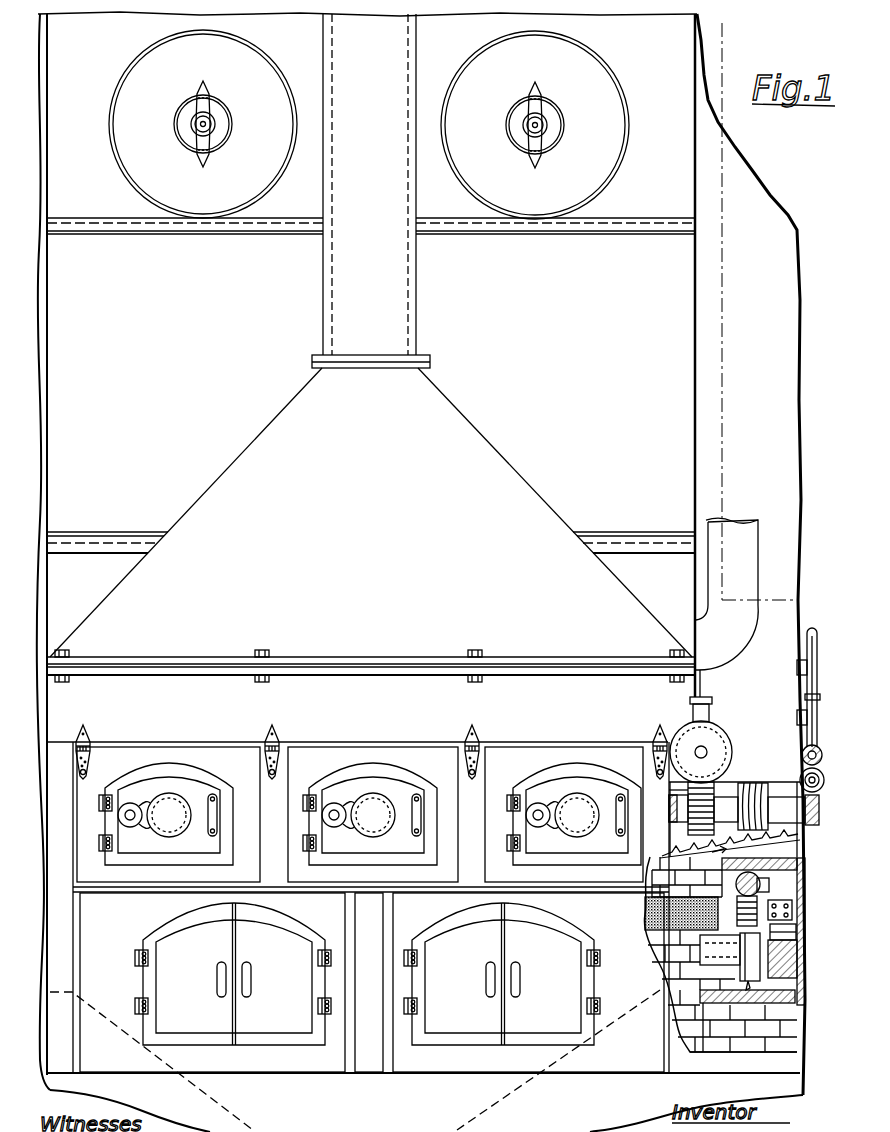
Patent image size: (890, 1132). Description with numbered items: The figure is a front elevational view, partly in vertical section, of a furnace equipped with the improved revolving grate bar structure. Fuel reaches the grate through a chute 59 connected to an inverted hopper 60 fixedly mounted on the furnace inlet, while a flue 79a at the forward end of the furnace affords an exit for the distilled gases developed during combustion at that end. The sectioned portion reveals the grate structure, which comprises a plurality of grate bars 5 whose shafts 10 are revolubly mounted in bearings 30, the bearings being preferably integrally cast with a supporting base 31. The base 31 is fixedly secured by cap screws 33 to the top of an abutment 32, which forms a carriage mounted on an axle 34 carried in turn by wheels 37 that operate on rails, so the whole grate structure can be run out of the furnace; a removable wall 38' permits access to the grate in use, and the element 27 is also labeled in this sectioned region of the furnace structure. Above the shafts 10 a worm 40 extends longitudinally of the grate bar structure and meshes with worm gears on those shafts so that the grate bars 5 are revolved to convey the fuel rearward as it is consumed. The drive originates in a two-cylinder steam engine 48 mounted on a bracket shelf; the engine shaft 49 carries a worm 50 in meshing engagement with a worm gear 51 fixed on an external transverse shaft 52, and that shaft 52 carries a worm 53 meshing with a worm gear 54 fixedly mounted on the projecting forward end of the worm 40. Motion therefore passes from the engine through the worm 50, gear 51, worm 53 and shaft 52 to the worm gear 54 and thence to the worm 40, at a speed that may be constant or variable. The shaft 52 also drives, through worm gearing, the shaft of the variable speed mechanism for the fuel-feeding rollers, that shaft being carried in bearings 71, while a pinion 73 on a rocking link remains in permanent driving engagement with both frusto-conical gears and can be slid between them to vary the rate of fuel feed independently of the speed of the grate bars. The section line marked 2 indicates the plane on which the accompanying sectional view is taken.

The section line 2- 2 is at (710, 32).
The chute 59 is at (365, 302).
The inverted hopper 60 is at (335, 437).
The flue 79a is at (752, 602).
The two-cylinder steam engine 48 is at (702, 699).
The shaft 49 is at (707, 750).
The worm 50 is at (688, 740).
The worm gear 51 is at (712, 790).
The worm 53 is at (752, 790).
The external transverse shaft 52 is at (782, 805).
The pinion 73 is at (821, 758).
The bearings 71 is at (824, 781).
The worm gear 54 is at (745, 850).
The shaft 10 is at (765, 876).
The grate bar 5 is at (648, 912).
The bearing 30 is at (806, 886).
The removable wall 38' is at (788, 911).
The supporting base 31 is at (806, 928).
The cap screws 33 is at (798, 950).
The abutment 32 is at (806, 972).
The axle 34 is at (663, 952).
The worm 40 is at (716, 965).
The partition 27 is at (770, 1027).
The wheels 37 is at (752, 986).